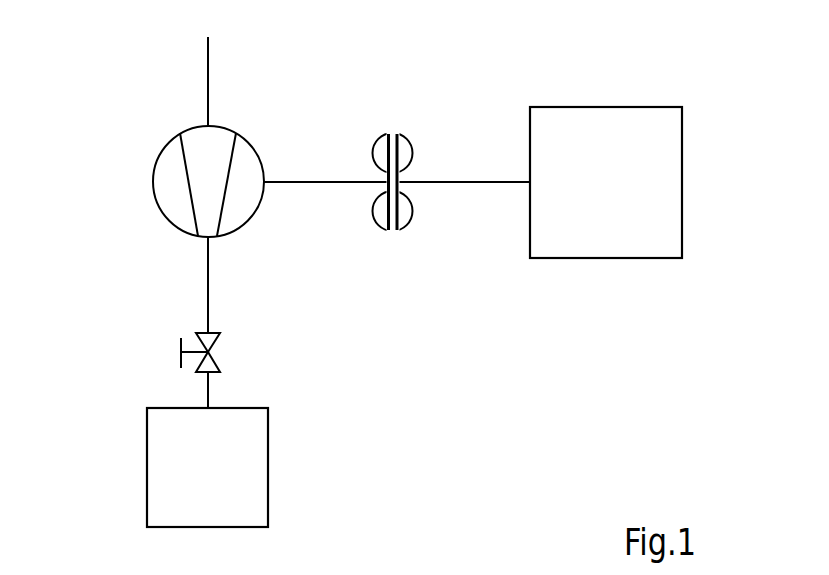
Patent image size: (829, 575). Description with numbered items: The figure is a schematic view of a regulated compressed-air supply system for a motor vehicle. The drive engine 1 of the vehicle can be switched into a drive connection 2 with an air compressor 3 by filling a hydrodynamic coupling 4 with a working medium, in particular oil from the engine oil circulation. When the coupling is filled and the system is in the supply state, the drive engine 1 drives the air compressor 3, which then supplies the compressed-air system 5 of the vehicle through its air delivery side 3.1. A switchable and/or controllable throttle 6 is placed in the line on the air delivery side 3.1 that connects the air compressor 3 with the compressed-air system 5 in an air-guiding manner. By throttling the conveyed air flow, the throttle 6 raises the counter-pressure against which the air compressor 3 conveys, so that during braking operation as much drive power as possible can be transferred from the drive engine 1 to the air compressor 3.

The drive engine 1 is at (615, 188).
The drive connection 2 is at (413, 168).
The air compressor 3 is at (241, 217).
The air delivery side 3.1 is at (208, 255).
The hydrodynamic coupling 4 is at (392, 231).
The compressed-air system 5 is at (218, 478).
The throttle 6 is at (218, 367).